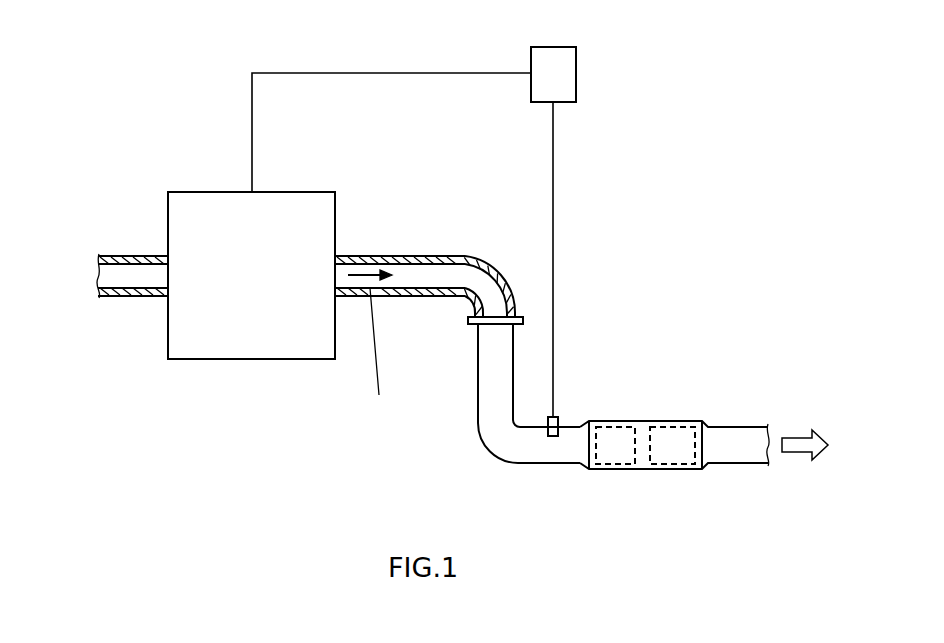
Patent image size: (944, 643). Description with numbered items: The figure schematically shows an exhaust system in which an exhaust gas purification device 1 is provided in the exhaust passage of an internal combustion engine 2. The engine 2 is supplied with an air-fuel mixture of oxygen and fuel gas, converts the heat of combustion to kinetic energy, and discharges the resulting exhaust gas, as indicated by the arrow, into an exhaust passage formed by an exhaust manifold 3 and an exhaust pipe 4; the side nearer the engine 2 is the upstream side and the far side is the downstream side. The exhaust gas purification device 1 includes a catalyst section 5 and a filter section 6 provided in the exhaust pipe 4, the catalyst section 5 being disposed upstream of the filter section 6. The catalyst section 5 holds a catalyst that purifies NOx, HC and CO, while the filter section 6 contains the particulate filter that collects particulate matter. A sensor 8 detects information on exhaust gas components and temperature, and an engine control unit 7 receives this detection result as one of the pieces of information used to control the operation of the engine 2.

The exhaust gas purification device 1 is at (682, 81).
The internal combustion engine 2 is at (236, 361).
The exhaust manifold 3 is at (430, 256).
The exhaust pipe 4 is at (478, 370).
The catalyst section 5 is at (614, 425).
The filter section 6 is at (668, 425).
The engine control unit (ECU) 7 is at (576, 63).
The sensor 8 is at (553, 437).